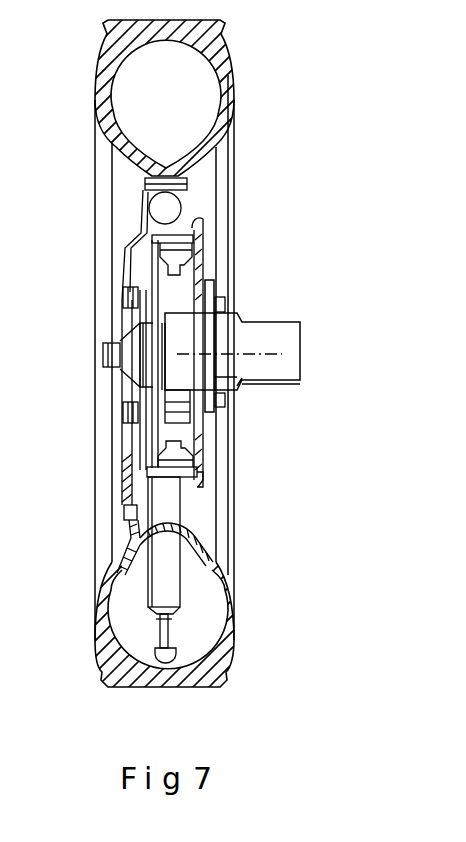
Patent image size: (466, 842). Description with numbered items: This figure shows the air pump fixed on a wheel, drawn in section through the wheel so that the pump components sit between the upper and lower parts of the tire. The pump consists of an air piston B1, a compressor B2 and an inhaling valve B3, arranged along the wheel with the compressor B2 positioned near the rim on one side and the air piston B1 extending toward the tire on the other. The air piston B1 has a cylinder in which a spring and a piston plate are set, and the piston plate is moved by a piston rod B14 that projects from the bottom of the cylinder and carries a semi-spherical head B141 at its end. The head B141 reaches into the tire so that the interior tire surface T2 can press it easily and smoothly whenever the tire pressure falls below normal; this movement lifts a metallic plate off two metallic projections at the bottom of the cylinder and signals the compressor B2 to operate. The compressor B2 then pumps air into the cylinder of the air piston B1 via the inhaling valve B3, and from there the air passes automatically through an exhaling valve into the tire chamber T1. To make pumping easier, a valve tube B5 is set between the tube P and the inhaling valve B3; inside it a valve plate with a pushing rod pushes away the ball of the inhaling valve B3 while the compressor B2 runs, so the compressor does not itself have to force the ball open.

The compressor B2 is at (180, 207).
The tube P is at (126, 487).
The valve tube B5 is at (128, 509).
The inhaling valve B3 is at (132, 521).
The air piston B1 is at (173, 568).
The piston rod B14 is at (168, 630).
The semi-spherical head B141 is at (190, 650).
The tire chamber T1 is at (192, 653).
The interior tire surface T2 is at (129, 668).